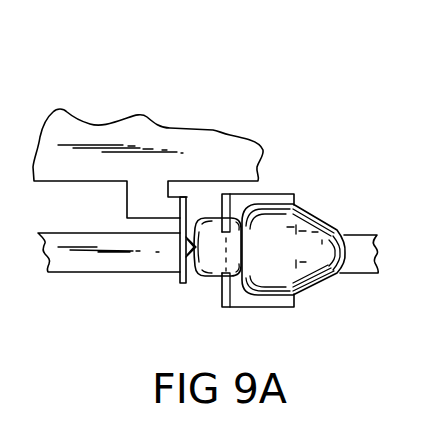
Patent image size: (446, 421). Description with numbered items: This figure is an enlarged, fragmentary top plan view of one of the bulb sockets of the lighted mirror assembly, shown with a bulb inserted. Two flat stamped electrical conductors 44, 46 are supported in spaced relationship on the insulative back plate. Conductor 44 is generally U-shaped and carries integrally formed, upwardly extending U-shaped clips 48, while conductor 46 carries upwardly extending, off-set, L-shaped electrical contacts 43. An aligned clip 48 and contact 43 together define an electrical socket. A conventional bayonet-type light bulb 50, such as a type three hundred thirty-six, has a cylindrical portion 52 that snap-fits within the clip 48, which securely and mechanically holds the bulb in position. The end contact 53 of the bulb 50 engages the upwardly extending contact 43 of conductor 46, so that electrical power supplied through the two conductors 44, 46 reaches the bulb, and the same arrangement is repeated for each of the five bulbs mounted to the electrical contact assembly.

The L-shaped electrical contact 43 is at (179, 251).
The electrical conductor 44 is at (65, 265).
The electrical conductor 46 is at (110, 134).
The U-shaped clip 48 is at (217, 300).
The bayonet light bulb 50 is at (315, 213).
The cylindrical portion 52 is at (210, 217).
The end contact 53 is at (192, 285).